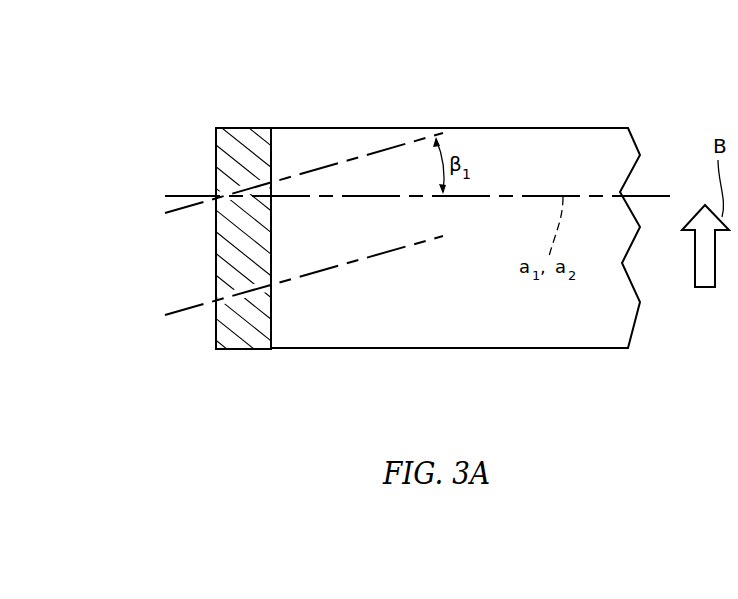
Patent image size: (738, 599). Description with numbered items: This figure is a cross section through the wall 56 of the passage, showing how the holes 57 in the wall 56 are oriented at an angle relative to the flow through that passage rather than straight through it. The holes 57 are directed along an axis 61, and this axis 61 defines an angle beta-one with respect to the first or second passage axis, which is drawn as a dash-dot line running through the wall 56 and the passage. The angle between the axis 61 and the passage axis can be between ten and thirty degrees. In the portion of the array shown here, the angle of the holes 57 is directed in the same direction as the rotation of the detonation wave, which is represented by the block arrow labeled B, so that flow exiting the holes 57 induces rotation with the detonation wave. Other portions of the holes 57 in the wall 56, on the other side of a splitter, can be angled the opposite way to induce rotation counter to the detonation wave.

The wall 56 is at (216, 153).
The holes 57 is at (248, 183).
The axis 61 is at (427, 132).